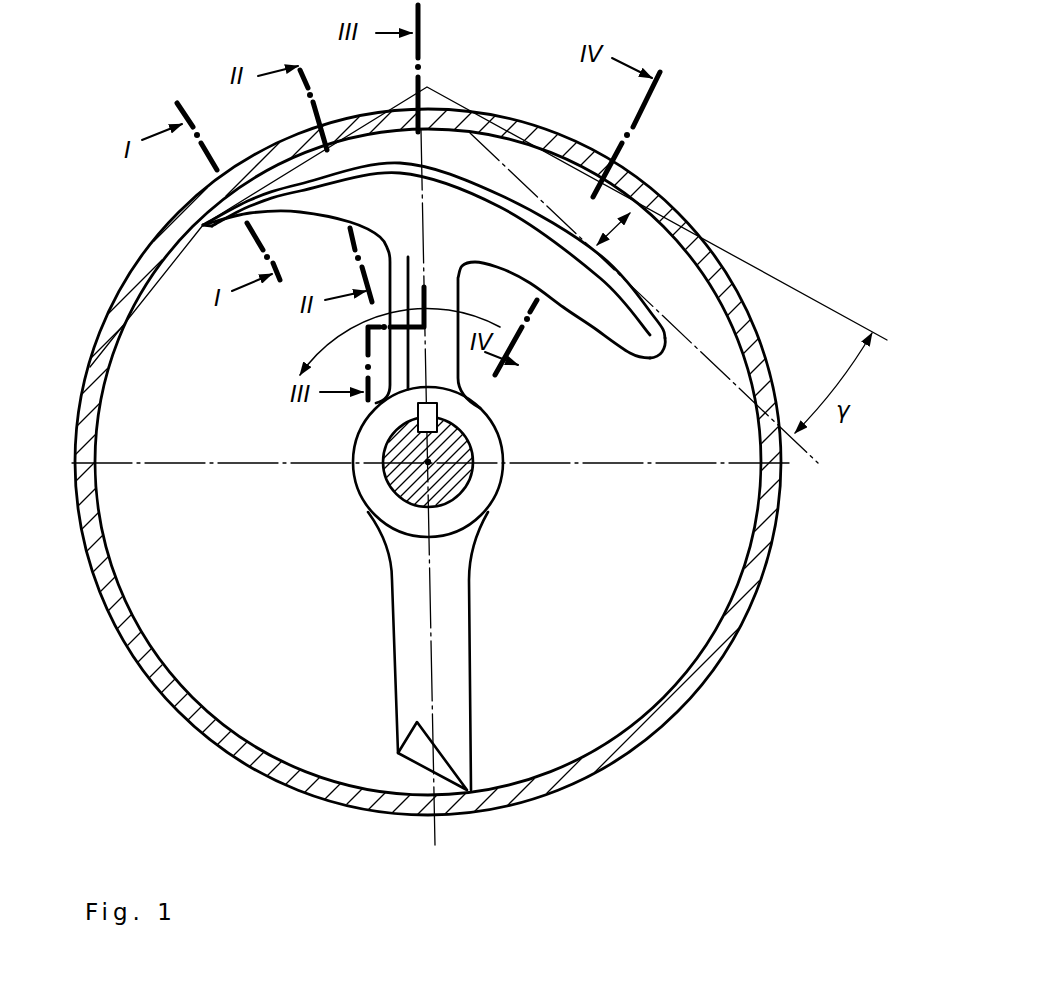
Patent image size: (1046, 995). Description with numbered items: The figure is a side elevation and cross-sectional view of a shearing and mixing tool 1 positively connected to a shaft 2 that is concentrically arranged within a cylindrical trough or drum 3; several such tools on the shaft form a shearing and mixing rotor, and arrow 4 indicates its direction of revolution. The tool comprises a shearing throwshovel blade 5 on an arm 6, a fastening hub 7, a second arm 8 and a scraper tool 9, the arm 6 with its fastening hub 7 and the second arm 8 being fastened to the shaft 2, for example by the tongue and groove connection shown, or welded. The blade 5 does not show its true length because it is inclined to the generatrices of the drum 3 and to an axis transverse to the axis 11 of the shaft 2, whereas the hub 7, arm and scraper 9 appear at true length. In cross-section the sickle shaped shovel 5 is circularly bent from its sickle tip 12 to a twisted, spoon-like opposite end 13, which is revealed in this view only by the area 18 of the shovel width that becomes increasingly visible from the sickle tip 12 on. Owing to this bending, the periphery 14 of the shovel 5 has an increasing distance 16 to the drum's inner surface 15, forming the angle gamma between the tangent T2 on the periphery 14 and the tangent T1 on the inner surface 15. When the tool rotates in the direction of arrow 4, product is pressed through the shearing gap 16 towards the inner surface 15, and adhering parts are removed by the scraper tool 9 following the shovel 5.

The shearing and mixing tool 1 is at (395, 213).
The shaft 2 is at (407, 480).
The trough or drum 3 is at (127, 630).
The arrow 4 is at (327, 340).
The shearing throwshovel blade 5 is at (500, 220).
The arm 6 is at (438, 297).
The fastening hub 7 is at (477, 490).
The second arm 8 is at (455, 638).
The scraper tool 9 is at (422, 745).
The axis of the shaft 11 is at (440, 458).
The sickle tip 12 is at (205, 232).
The spoon-like opposite end 13 is at (647, 358).
The periphery of the shearing throwshovel 14 is at (625, 273).
The inner surface of the drum 15 is at (123, 587).
The distance (shearing gap) 16 is at (613, 225).
The area of the width of the shearing throwshovel 18 is at (657, 333).
The tangent on the inner surface T1 is at (820, 302).
The tangent on the periphery T2 is at (740, 390).